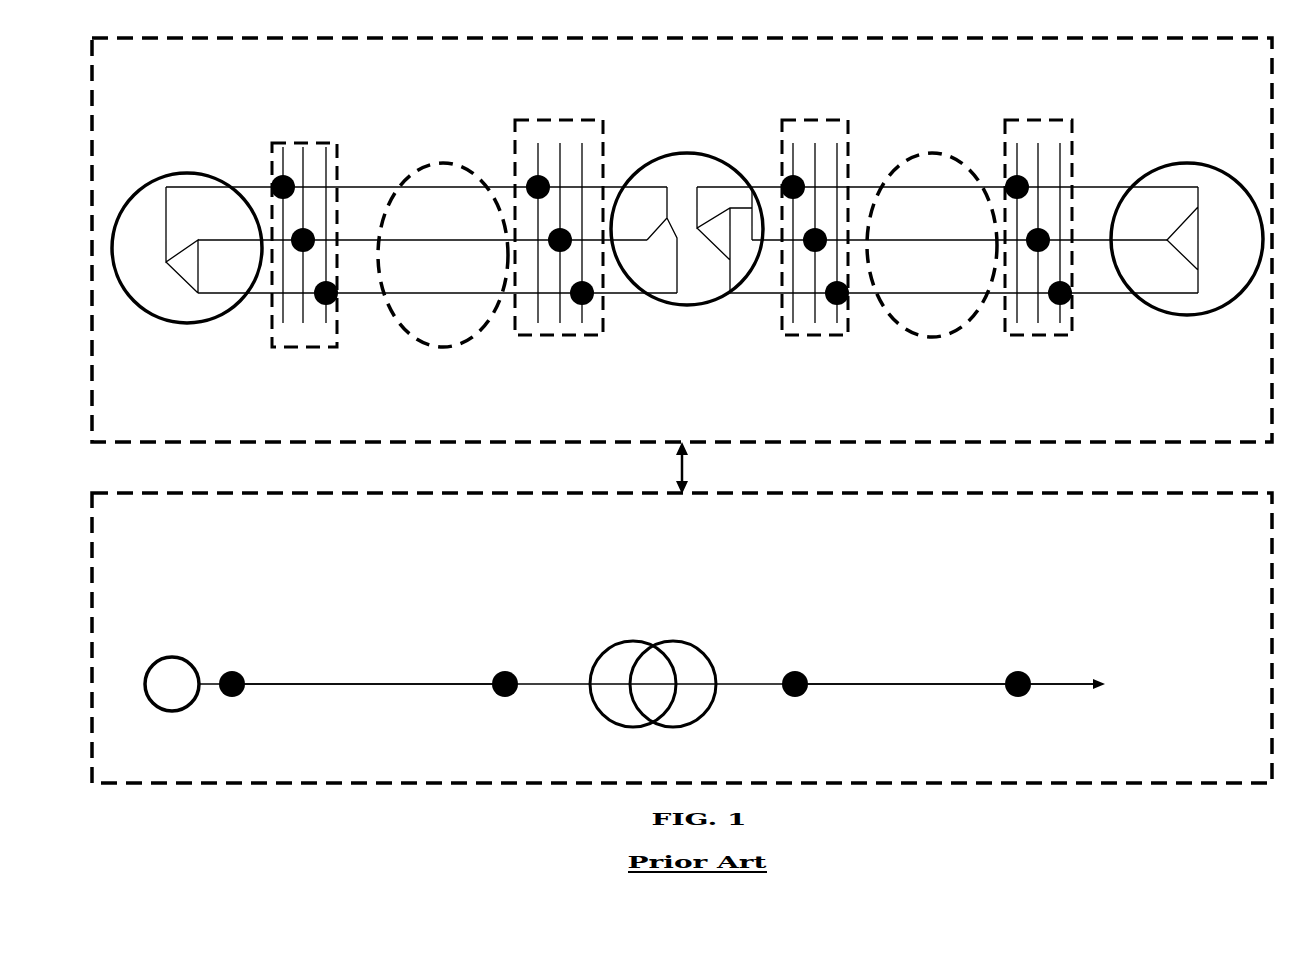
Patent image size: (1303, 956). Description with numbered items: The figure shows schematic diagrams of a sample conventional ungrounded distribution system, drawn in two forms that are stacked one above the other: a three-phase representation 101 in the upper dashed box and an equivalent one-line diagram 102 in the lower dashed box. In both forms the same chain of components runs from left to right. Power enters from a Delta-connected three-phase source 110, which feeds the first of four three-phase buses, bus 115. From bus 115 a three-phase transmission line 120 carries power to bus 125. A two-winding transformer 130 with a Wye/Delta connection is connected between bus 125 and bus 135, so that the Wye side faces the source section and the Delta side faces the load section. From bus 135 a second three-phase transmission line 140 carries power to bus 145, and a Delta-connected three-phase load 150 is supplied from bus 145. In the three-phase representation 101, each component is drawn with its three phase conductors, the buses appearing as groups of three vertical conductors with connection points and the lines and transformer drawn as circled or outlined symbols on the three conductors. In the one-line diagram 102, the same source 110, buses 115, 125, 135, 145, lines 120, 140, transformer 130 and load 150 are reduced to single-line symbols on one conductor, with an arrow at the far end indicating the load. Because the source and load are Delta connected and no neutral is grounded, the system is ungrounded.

The three-phase representation 101 is at (1250, 440).
The one-line diagram 102 is at (1243, 780).
The Delta-connected three-phase source 110 is at (167, 655).
The bus 115 is at (315, 345).
The three-phase transmission line 120 is at (327, 685).
The bus 125 is at (580, 333).
The two-winding transformer 130 is at (645, 632).
The bus 135 is at (835, 333).
The three-phase transmission line 140 is at (870, 683).
The bus 145 is at (1050, 335).
The Delta-connected three-phase load 150 is at (1050, 685).